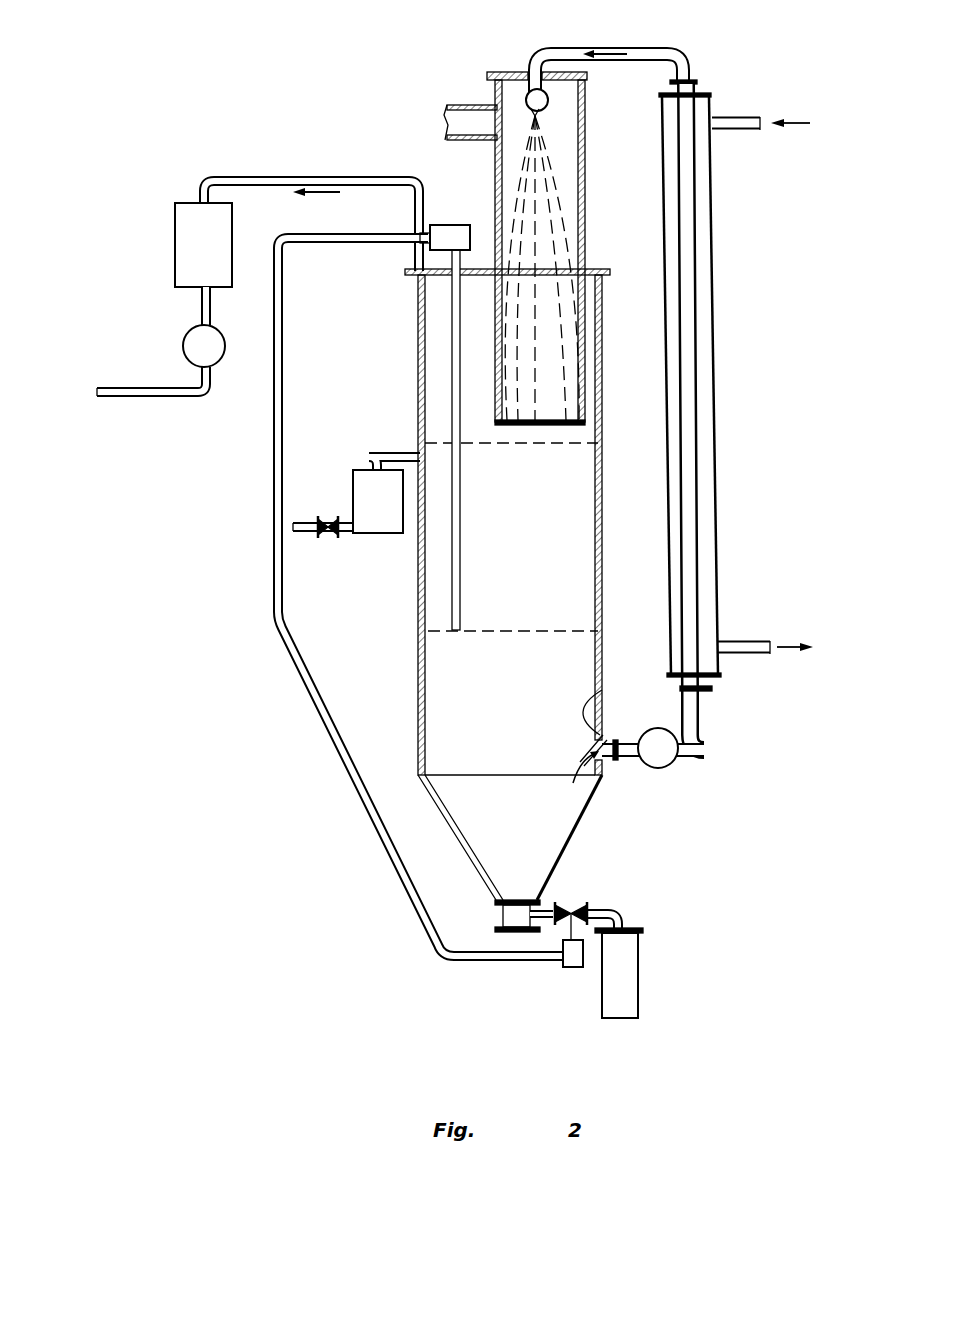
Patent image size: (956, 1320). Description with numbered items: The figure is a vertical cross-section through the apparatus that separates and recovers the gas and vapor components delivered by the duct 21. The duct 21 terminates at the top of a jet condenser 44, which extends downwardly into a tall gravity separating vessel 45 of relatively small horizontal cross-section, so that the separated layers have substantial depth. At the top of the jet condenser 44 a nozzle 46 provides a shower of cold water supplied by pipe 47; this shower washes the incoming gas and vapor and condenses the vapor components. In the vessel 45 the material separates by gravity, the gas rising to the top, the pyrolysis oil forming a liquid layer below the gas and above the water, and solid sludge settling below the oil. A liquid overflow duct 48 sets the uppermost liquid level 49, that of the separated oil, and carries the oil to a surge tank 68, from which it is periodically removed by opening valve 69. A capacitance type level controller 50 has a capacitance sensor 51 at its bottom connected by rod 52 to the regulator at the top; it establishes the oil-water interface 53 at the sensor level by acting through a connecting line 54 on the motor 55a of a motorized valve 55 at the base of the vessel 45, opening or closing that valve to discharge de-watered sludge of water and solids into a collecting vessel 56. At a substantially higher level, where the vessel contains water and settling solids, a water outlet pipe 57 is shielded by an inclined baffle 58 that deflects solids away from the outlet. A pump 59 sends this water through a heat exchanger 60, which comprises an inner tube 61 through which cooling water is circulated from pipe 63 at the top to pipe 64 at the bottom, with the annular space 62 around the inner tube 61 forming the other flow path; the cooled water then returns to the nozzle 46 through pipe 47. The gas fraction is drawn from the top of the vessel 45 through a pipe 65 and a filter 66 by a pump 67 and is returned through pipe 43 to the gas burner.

The duct 21 is at (468, 107).
The pipe 43 is at (140, 398).
The jet condenser 44 is at (528, 222).
The gravity separating vessel 45 is at (603, 582).
The nozzle 46 is at (549, 106).
The pipe 47 is at (657, 48).
The liquid overflow duct 48 is at (375, 453).
The uppermost liquid level 49 is at (423, 437).
The capacitance type level controller 50 is at (455, 225).
The capacitance sensor 51 is at (428, 628).
The rod 52 is at (452, 570).
The oil-water interface 53 is at (492, 633).
The connecting line 54 is at (367, 805).
The motorized valve 55 is at (577, 904).
The motor 55a is at (560, 968).
The collecting vessel 56 is at (631, 984).
The water outlet pipe 57 is at (607, 760).
The inclined baffle 58 is at (603, 690).
The pump 59 is at (668, 767).
The heat exchanger 60 is at (717, 425).
The inner tube 61 is at (702, 560).
The annular space 62 is at (703, 500).
The pipe 63 is at (732, 132).
The pipe 64 is at (752, 640).
The pipe 65 is at (288, 178).
The filter 66 is at (217, 255).
The pump 67 is at (183, 340).
The surge tank 68 is at (390, 509).
The valve 69 is at (332, 520).